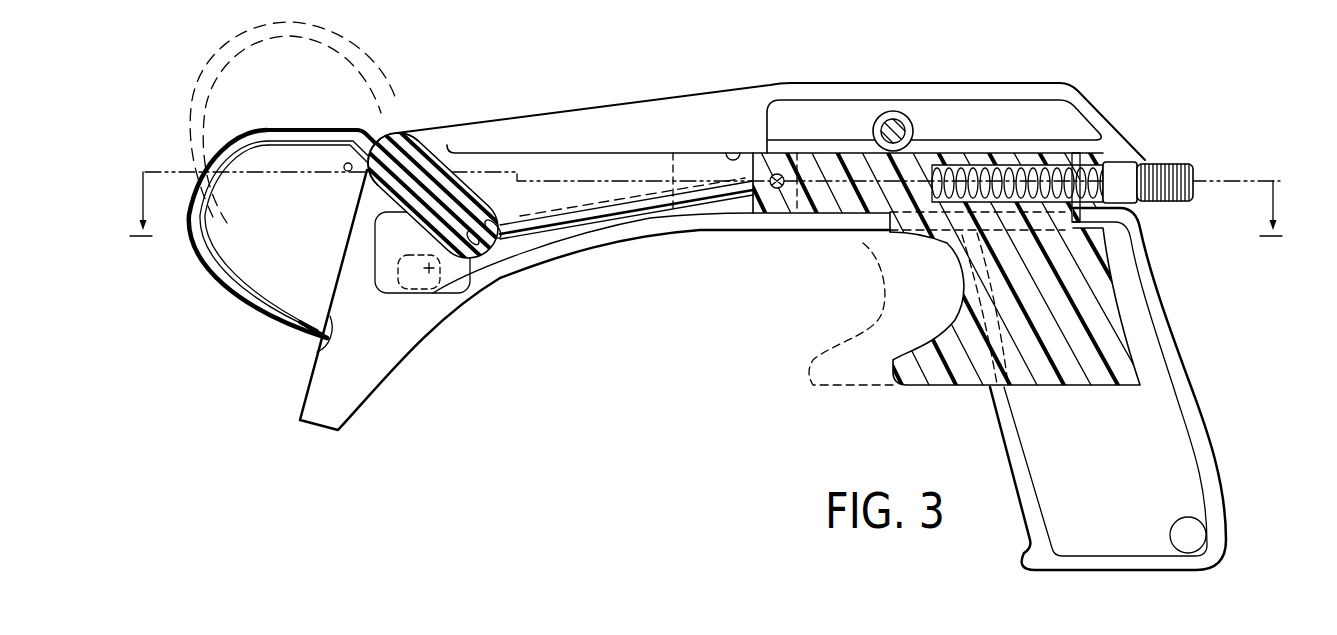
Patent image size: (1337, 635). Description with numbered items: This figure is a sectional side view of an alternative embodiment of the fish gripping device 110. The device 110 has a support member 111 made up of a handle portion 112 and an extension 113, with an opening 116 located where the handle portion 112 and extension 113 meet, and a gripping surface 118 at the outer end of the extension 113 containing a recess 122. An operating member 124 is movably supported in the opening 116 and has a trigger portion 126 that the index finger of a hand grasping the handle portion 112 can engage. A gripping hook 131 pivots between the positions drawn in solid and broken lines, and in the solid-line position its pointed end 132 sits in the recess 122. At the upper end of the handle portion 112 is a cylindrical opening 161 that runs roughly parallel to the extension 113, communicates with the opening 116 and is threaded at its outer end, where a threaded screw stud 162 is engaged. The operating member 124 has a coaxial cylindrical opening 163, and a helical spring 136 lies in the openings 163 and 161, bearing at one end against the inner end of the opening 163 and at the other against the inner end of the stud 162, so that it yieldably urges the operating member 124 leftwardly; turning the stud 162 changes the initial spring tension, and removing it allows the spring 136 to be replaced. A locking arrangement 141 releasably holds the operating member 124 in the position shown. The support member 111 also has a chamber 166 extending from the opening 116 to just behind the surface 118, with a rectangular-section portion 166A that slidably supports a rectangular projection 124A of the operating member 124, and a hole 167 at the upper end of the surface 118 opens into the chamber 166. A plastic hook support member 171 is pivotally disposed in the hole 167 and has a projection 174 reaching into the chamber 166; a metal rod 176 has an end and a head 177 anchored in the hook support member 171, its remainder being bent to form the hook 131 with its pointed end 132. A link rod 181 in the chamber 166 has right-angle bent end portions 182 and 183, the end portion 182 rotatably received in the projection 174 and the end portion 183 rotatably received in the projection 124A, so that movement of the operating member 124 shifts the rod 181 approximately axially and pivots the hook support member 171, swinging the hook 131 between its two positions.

The fish gripping device 110 is at (541, 90).
The support member 111 is at (605, 106).
The handle portion 112 is at (1175, 432).
The extension 113 is at (655, 117).
The opening 116 is at (860, 218).
The gripping surface 118 is at (340, 258).
The recess 122 is at (322, 347).
The operating member 124 is at (1097, 278).
The rectangular projection 124A is at (810, 165).
The trigger portion 126 is at (972, 362).
The gripping hook 131 is at (212, 165).
The pointed end 132 is at (300, 320).
The helical spring 136 is at (1015, 172).
The locking arrangement 141 is at (900, 110).
The cylindrical opening 161 is at (1117, 165).
The threaded screw stud 162 is at (1170, 164).
The cylindrical opening 163 is at (968, 175).
The chamber 166 is at (545, 162).
The rectangular cross-section portion 166A is at (722, 152).
The hole 167 is at (344, 170).
The hook support member 171 is at (397, 143).
The projection 174 is at (471, 238).
The metal rod 176 is at (313, 134).
The head 177 is at (462, 140).
The link rod 181 is at (608, 210).
The end portion 182 is at (500, 233).
The end portion 183 is at (792, 198).